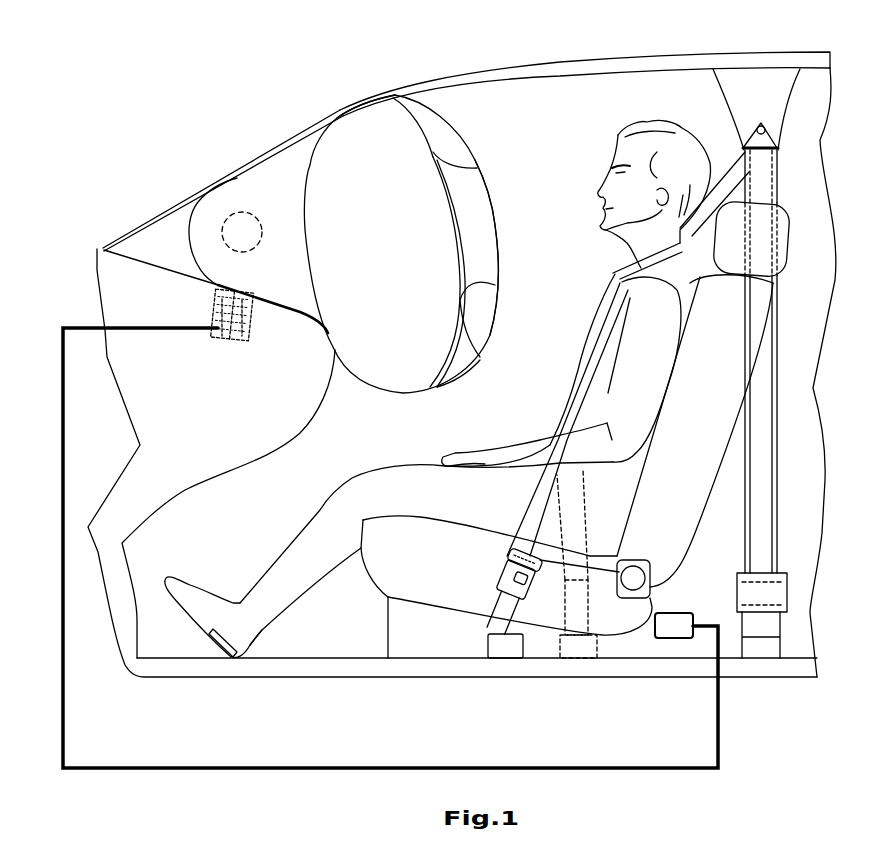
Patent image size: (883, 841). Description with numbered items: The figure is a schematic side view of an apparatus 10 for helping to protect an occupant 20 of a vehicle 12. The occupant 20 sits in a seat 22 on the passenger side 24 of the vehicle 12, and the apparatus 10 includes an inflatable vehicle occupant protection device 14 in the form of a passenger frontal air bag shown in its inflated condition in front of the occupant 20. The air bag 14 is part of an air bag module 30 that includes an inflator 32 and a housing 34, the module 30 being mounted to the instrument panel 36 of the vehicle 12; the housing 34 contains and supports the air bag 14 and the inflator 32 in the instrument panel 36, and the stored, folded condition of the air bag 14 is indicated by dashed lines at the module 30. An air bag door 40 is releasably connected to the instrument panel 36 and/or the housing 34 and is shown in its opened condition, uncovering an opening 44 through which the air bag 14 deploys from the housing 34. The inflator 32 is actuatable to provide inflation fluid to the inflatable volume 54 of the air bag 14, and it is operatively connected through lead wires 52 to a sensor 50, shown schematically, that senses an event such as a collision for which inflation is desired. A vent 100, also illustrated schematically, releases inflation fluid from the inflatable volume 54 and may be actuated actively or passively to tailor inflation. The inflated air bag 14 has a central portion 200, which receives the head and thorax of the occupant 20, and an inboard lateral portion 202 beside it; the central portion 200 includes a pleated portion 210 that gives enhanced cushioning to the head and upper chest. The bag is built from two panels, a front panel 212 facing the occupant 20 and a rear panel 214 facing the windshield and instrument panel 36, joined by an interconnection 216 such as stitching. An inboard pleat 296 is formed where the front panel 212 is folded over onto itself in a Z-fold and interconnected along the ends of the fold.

The apparatus 10 is at (134, 193).
The vehicle 12 is at (140, 132).
The inflatable vehicle occupant protection device 14 is at (410, 353).
The occupant 20 is at (652, 150).
The seat 22 is at (712, 362).
The passenger side 24 is at (535, 115).
The air bag module 30 is at (193, 303).
The inflator 32 is at (232, 325).
The housing 34 is at (238, 345).
The instrument panel 36 is at (282, 427).
The air bag door 40 is at (215, 288).
The opening 44 is at (248, 281).
The sensor 50 is at (673, 629).
The lead wires 52 is at (183, 767).
The inflatable volume 54 is at (390, 259).
The vent 100 is at (241, 190).
The central portion 200 is at (478, 211).
The inboard lateral portion 202 is at (363, 145).
The pleated portion 210 is at (480, 250).
The front panel 212 is at (470, 333).
The rear panel 214 is at (213, 210).
The interconnection 216 is at (418, 127).
The inboard pleat 296 is at (453, 230).